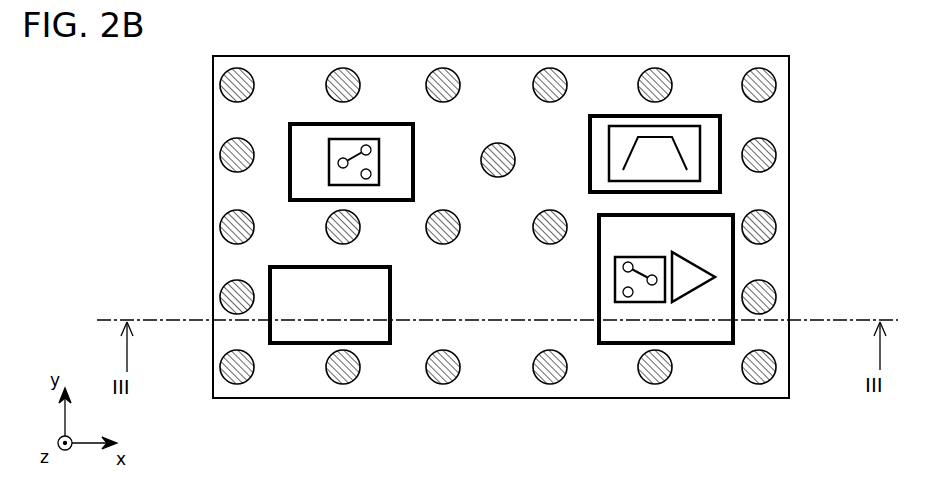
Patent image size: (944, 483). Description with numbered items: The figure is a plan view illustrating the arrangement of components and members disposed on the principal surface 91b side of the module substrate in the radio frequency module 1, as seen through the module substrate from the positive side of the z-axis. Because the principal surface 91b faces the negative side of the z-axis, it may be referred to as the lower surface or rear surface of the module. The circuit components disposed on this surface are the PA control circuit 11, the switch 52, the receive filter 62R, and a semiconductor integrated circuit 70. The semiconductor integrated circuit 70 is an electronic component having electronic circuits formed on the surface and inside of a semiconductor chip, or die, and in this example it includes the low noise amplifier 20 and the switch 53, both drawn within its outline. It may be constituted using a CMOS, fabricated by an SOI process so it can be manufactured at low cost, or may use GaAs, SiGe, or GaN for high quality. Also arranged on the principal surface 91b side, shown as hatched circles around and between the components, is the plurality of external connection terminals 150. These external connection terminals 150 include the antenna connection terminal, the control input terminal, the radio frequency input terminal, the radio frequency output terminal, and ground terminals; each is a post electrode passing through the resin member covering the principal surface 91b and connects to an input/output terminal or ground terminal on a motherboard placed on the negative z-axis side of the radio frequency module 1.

The radio frequency module 1 is at (846, 66).
The external connection terminals 150 is at (777, 150).
The switch 52 is at (372, 122).
The receive filter 62R is at (690, 114).
The PA control circuit 11 is at (378, 264).
The principal surface 91b is at (496, 300).
The semiconductor integrated circuit 70 is at (596, 298).
The switch 53 is at (640, 257).
The low noise amplifier 20 is at (690, 262).